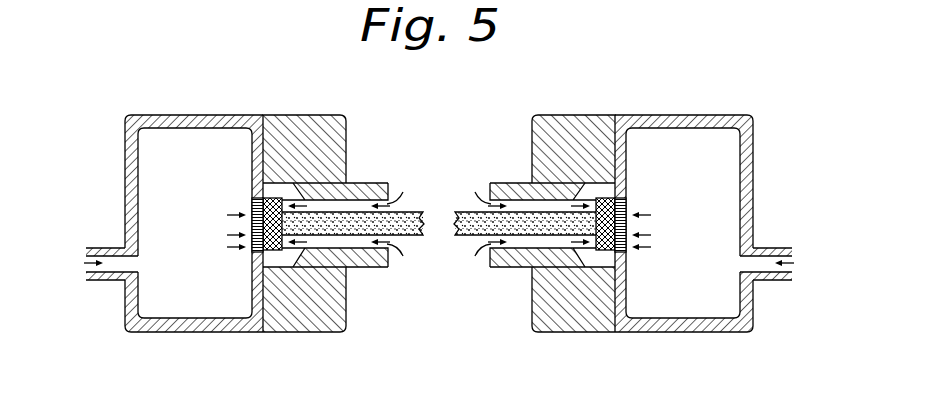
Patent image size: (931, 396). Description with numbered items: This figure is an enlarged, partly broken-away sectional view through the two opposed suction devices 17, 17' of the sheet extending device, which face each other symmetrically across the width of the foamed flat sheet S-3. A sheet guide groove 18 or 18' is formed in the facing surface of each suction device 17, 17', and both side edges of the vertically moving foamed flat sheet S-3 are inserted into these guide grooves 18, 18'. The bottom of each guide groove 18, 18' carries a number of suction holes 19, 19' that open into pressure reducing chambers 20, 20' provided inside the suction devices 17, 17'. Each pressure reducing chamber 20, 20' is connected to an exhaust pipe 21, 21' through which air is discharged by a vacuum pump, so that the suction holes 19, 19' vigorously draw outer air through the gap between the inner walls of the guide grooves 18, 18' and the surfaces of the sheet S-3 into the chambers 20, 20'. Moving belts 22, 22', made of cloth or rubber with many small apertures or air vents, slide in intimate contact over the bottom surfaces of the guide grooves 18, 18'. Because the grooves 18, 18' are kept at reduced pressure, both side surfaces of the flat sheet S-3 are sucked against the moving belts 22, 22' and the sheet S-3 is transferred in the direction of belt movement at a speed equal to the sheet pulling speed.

The suction device 17 is at (325, 199).
The sheet guide groove 18 is at (342, 202).
The suction holes 19 is at (239, 214).
The pressure reducing chamber 20 is at (175, 223).
The exhaust pipe 21 is at (111, 283).
The moving belt 22 is at (237, 251).
The foamed flat sheet S-3 is at (462, 212).
The suction device 17' is at (555, 201).
The sheet guide groove 18' is at (535, 202).
The suction holes 19' is at (648, 221).
The pressure reducing chamber 20' is at (703, 223).
The exhaust pipe 21' is at (766, 285).
The moving belt 22' is at (648, 251).